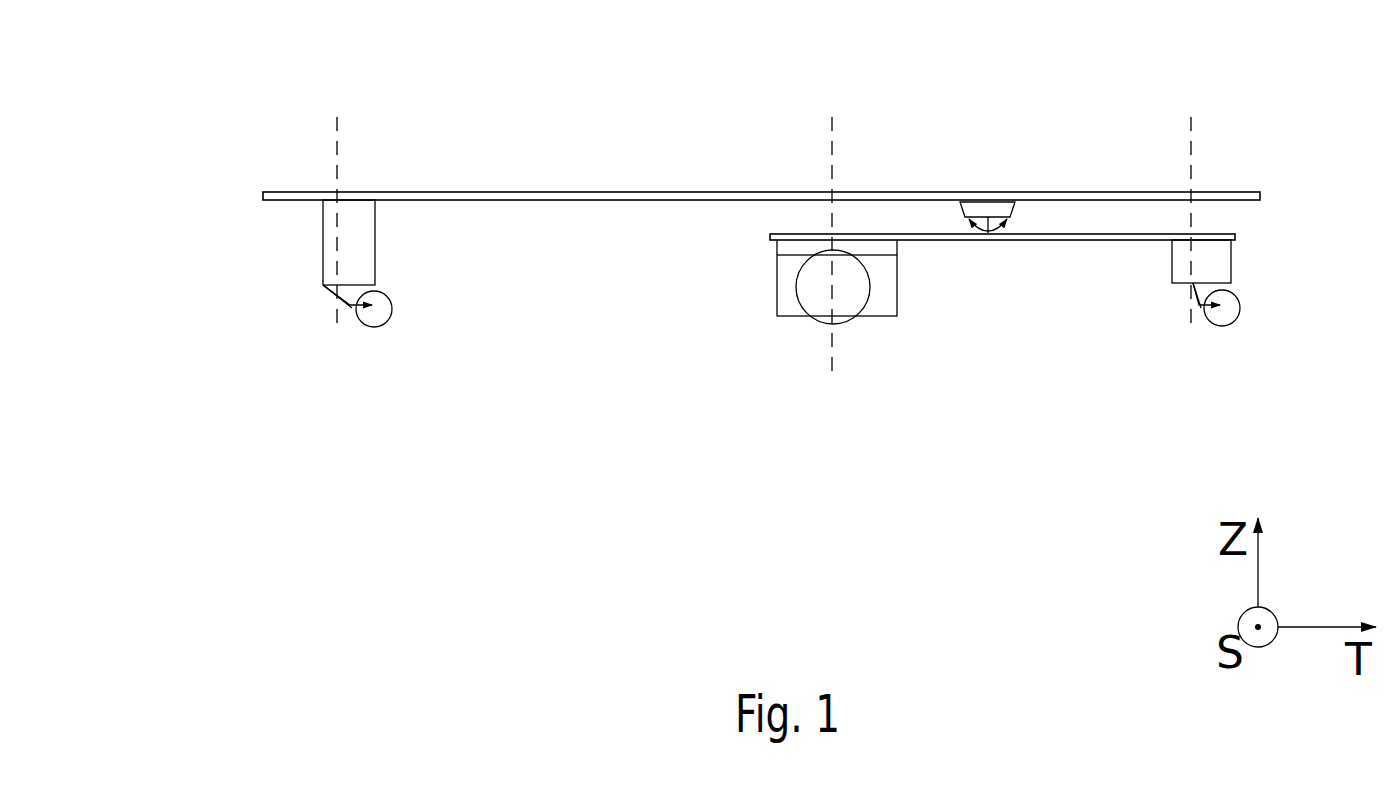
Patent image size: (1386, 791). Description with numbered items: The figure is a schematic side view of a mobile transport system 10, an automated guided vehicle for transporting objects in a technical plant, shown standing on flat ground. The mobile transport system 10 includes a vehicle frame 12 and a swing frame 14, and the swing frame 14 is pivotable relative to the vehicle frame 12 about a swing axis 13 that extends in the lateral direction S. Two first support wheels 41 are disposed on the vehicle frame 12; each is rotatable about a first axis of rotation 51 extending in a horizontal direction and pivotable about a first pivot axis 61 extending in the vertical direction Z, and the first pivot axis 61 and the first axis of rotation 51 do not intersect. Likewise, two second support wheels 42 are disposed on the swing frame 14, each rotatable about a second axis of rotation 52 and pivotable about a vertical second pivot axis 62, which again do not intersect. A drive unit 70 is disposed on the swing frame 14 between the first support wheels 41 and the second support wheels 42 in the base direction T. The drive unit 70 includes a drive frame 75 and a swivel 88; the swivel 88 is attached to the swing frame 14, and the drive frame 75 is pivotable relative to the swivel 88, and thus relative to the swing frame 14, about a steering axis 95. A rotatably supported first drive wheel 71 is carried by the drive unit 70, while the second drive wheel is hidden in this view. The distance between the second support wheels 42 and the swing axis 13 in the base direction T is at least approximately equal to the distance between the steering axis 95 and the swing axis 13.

The mobile transport system 10 is at (192, 198).
The vehicle frame 12 is at (1107, 195).
The swing axis 13 is at (988, 206).
The swing frame 14 is at (918, 237).
The first support wheels 41 is at (373, 318).
The second support wheels 42 is at (1228, 317).
The first axis of rotation 51 is at (376, 296).
The second axis of rotation 52 is at (1206, 321).
The first pivot axis 61 is at (337, 150).
The second pivot axis 62 is at (1191, 150).
The drive unit 70 is at (818, 247).
The first drive wheel 71 is at (843, 305).
The drive frame 75 is at (787, 285).
The swivel 88 is at (790, 248).
The steering axis 95 is at (832, 152).